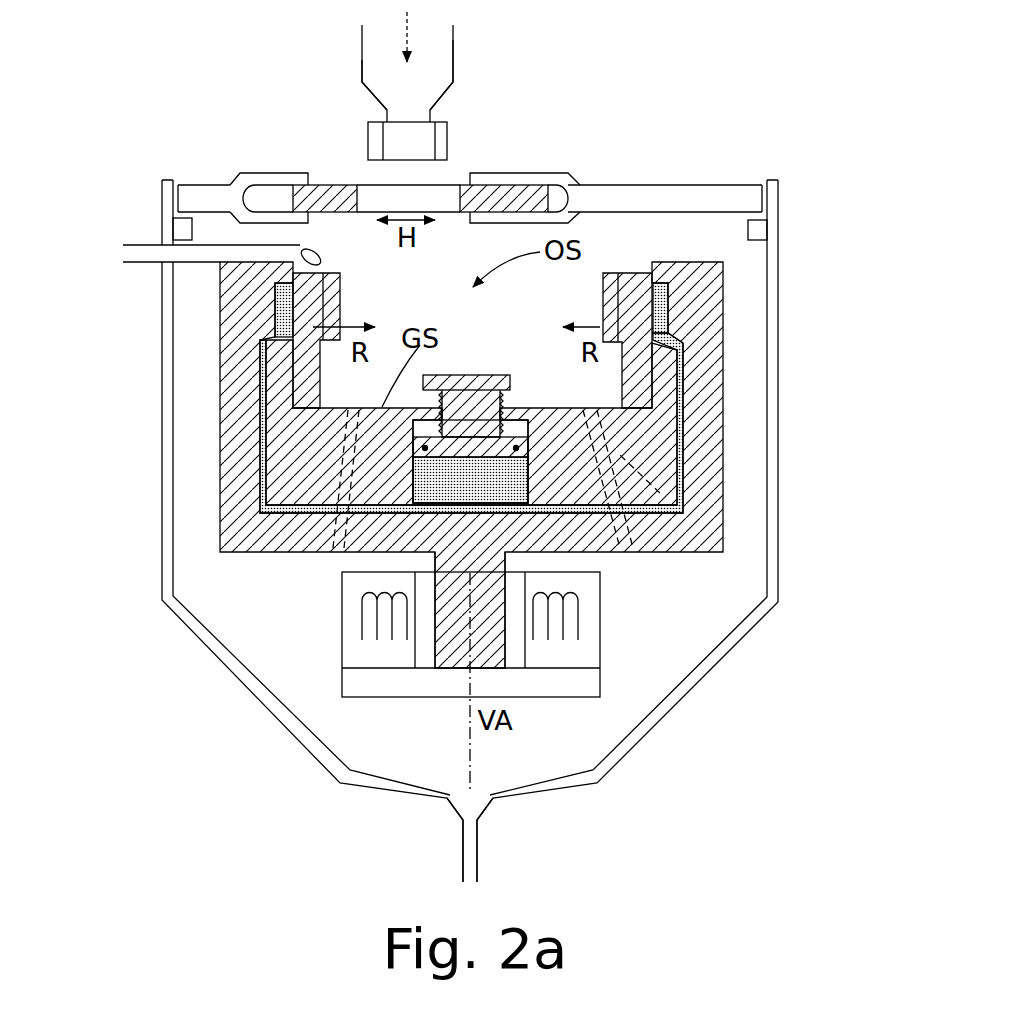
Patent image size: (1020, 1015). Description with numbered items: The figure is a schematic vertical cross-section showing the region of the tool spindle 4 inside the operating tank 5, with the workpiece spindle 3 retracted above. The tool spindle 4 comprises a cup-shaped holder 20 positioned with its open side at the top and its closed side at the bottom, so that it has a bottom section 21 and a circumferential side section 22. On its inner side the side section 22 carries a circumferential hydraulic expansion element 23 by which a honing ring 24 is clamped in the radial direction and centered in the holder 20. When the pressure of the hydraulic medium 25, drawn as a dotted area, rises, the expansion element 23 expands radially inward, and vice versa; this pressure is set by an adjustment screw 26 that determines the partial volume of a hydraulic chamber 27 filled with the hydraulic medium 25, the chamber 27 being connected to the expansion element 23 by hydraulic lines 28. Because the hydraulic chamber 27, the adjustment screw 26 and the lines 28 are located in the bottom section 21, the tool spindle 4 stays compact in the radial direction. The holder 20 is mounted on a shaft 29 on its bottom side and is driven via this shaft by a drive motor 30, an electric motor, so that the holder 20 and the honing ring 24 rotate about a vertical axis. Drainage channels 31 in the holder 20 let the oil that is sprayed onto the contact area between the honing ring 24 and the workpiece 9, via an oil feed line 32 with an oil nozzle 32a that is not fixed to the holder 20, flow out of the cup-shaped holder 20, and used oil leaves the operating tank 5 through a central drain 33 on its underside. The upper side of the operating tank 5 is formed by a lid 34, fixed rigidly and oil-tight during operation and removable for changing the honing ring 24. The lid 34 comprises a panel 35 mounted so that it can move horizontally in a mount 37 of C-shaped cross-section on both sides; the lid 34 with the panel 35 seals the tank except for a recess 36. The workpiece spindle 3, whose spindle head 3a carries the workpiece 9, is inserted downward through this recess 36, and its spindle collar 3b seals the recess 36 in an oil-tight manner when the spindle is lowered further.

The workpiece spindle 3 is at (373, 43).
The spindle head 3a is at (360, 128).
The spindle collar 3b is at (455, 63).
The workpiece 9 is at (450, 143).
The oil feed line 32 is at (200, 255).
The oil nozzle 32a is at (303, 248).
The mount 37 is at (260, 163).
The recess 36 is at (373, 195).
The panel 35 is at (540, 197).
The lid 34 is at (665, 197).
The cup-shaped holder 20 is at (210, 450).
The hydraulic lines 28 is at (680, 458).
The bottom section 21 is at (603, 553).
The hydraulic expansion element 23 is at (273, 300).
The honing ring 24 is at (308, 315).
The circumferential side section 22 is at (697, 330).
The adjustment screw 26 is at (470, 403).
The hydraulic medium 25 is at (502, 463).
The hydraulic chamber 27 is at (465, 475).
The drainage channels 31 is at (585, 415).
The shaft 29 is at (450, 627).
The drive motor 30 is at (567, 618).
The central drain 33 is at (490, 795).
The operating tank 5 is at (780, 480).
The tool spindle 4 is at (303, 645).